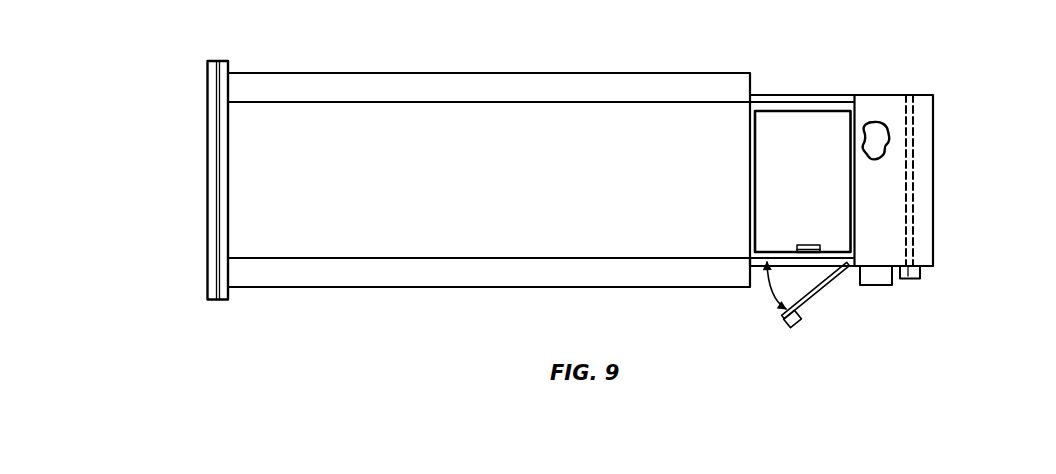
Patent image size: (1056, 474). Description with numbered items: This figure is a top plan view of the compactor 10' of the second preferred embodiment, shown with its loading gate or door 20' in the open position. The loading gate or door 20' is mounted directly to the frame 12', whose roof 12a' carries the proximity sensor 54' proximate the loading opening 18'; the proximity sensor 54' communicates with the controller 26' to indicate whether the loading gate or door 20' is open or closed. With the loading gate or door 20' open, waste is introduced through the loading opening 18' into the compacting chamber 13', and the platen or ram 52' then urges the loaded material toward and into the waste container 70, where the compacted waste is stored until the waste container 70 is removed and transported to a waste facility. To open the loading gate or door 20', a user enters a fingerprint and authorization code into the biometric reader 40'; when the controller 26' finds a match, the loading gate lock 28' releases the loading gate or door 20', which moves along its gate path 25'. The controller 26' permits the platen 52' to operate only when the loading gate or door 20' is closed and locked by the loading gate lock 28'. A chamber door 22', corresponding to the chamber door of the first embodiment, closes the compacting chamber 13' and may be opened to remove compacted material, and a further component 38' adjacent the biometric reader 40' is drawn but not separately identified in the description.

The compactor 10' is at (489, 144).
The waste container 70 is at (389, 238).
The chamber door 22' is at (186, 180).
The frame 12' is at (841, 158).
The roof 12a' is at (800, 145).
The compacting chamber 13' is at (888, 105).
The platen or ram 52' is at (947, 180).
The proximity sensor 54' is at (895, 224).
The fan 38' is at (880, 304).
The biometric reader 40' is at (935, 292).
The controller 26' is at (942, 319).
The loading gate or door 20' is at (818, 306).
The loading gate lock 28' is at (804, 347).
The gate path 25' is at (764, 312).
The loading opening 18' is at (741, 303).